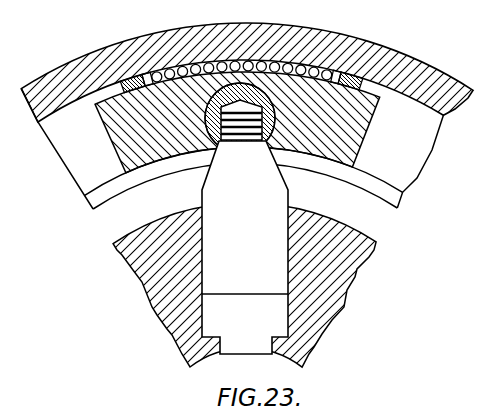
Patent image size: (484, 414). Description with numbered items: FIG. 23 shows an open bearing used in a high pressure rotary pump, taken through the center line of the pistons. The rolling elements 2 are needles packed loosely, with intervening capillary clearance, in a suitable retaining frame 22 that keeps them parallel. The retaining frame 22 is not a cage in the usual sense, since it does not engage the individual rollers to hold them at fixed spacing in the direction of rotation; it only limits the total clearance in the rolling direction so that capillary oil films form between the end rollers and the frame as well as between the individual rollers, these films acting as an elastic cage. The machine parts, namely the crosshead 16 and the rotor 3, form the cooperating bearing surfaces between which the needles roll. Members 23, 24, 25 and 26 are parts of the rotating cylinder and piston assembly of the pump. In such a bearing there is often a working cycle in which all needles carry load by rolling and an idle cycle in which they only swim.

The balls of ball bearing 2 is at (325, 72).
The rotor 3 is at (343, 55).
The crosshead 16 is at (357, 133).
The retaining frame 22 is at (359, 85).
The part of the rotating cylinder and piston assembly 23 is at (349, 232).
The part of the rotating cylinder and piston assembly 24 is at (276, 195).
The part of the rotating cylinder and piston assembly 25 is at (271, 118).
The part of the rotating cylinder and piston assembly 26 is at (238, 131).